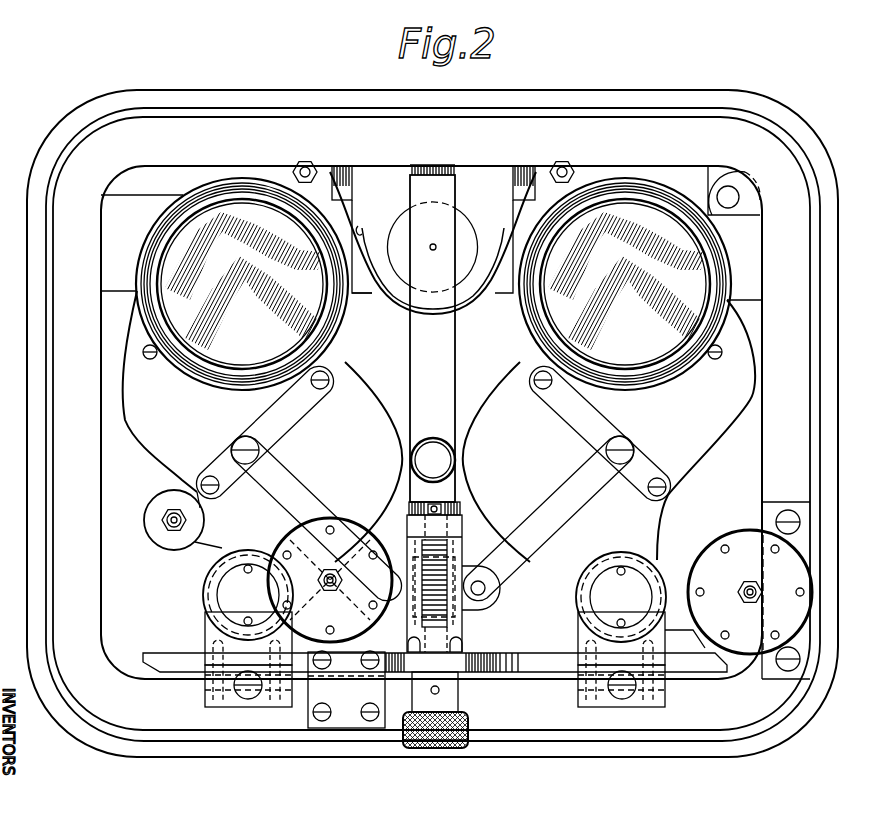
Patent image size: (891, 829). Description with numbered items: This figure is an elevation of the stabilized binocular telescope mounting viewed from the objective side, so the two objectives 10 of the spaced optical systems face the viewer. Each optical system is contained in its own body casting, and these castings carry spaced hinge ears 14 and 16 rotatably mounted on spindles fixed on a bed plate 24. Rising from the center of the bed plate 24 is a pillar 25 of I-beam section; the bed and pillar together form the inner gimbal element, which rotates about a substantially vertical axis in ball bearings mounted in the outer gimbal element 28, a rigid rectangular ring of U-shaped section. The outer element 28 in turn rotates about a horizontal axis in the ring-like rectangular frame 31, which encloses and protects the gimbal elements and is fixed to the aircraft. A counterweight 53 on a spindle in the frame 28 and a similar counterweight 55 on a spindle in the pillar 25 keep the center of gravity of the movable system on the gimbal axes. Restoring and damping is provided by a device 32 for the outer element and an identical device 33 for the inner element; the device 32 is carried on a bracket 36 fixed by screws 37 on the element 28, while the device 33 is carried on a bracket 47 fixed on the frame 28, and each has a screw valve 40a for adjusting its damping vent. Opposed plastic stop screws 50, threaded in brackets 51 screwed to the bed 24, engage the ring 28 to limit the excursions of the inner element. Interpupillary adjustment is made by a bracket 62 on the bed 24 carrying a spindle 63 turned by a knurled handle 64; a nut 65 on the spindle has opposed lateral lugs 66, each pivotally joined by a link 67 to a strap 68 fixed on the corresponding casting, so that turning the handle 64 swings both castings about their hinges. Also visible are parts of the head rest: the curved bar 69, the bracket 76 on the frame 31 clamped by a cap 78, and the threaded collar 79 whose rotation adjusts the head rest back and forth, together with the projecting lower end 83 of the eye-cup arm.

The outer gimbal element 28 is at (541, 128).
The frame 31 is at (620, 92).
The bracket 76 is at (478, 178).
The hinge ear 16 is at (655, 540).
The elongated bar 69 is at (366, 297).
The objective 10 is at (232, 348).
The projecting lower end of arm 83 is at (318, 170).
The threaded collar 79 is at (362, 228).
The cap 78 is at (462, 220).
The pillar 25 is at (456, 358).
The counterweight 55 is at (446, 458).
The spindle 63 is at (472, 514).
The bracket 62 is at (466, 642).
The knurled handle 64 is at (470, 726).
The bed plate 24 is at (532, 672).
The bracket 51 is at (205, 690).
The plastic stop screw 50 is at (248, 698).
The bracket 47 is at (356, 695).
The screw valve 40a is at (752, 580).
The restoring and damping device 33 is at (292, 545).
The lateral lug 66 is at (506, 597).
The nut 65 is at (490, 613).
The restoring and damping device 32 is at (815, 578).
The bracket 36 is at (812, 518).
The screw 37 is at (775, 522).
The hinge ear 14 is at (205, 548).
The strap 68 is at (300, 402).
The link 67 is at (300, 478).
The counterweight 53 is at (752, 222).